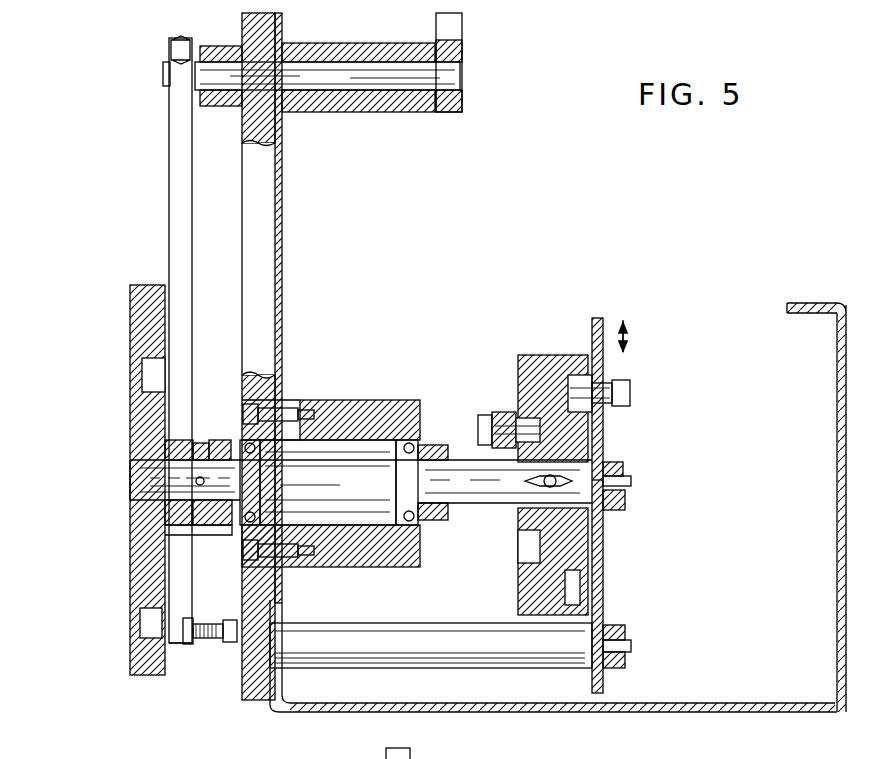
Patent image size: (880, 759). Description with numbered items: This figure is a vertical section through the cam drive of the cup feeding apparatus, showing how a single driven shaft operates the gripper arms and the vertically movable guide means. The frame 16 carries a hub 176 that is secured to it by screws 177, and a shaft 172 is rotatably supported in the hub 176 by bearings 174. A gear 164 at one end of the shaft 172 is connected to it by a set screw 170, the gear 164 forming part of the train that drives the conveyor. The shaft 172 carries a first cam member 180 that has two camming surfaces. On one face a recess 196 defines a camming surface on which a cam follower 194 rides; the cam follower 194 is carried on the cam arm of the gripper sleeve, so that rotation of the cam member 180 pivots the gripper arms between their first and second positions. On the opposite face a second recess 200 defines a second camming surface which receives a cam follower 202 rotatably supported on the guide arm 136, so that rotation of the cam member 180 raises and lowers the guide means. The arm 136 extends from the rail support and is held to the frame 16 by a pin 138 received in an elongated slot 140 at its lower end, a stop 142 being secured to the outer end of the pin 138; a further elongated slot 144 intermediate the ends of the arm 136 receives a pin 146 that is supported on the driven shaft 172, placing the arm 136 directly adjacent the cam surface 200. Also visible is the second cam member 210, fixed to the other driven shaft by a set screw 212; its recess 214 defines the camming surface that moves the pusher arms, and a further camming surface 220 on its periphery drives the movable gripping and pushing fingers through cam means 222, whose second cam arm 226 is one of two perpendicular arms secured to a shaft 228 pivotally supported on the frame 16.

The frame 16 is at (283, 332).
The arm 136 is at (605, 595).
The pin 138 is at (635, 648).
The elongated slot 140 is at (605, 628).
The stop 142 is at (610, 668).
The elongated slot 144 is at (600, 468).
The pin 146 is at (632, 490).
The gear 164 is at (220, 440).
The set screw 170 is at (205, 450).
The shaft 172 is at (135, 480).
The bearings 174 is at (408, 440).
The hub 176 is at (375, 415).
The screws 177 is at (282, 408).
The first cam member 180 is at (538, 360).
The cam follower 194 is at (525, 425).
The recess 196 is at (522, 550).
The second recess 200 is at (598, 585).
The cam follower 202 is at (578, 385).
The second cam member 210 is at (135, 420).
The set screw 212 is at (148, 392).
The recess 214 is at (130, 338).
The camming surface 220 is at (140, 675).
The cam means 222 is at (142, 113).
The second cam arm 226 is at (452, 27).
The shaft 228 is at (165, 72).